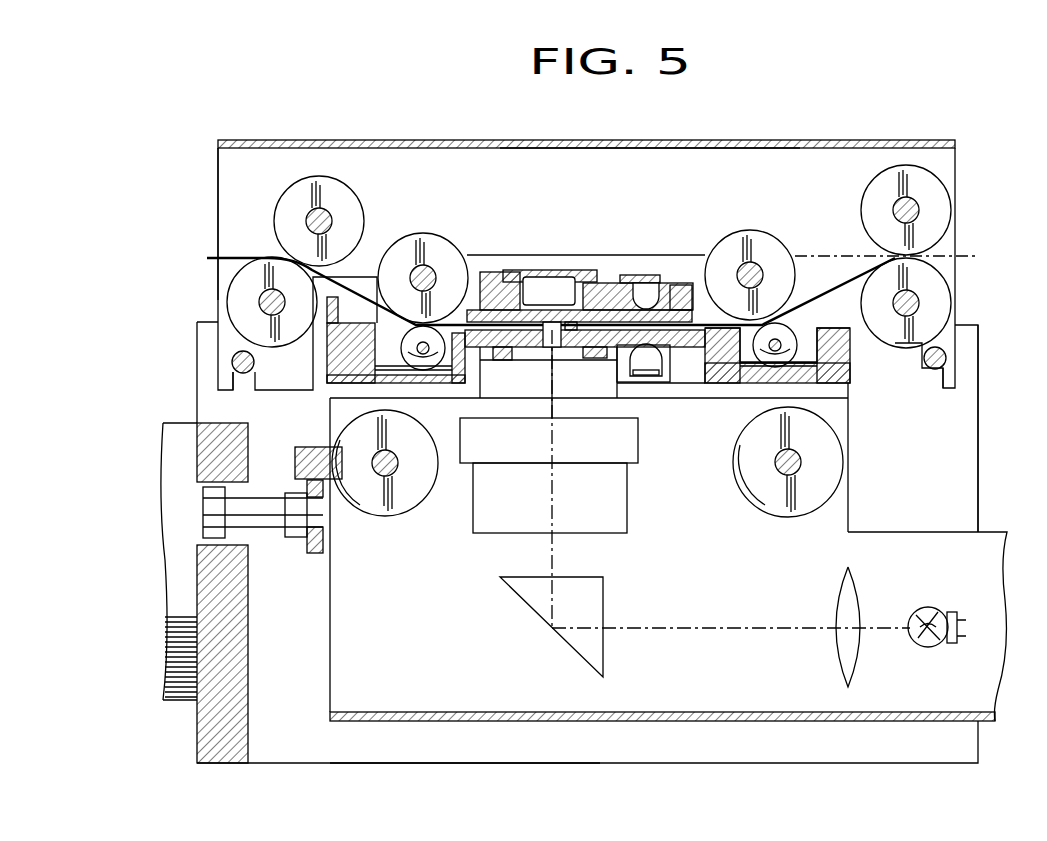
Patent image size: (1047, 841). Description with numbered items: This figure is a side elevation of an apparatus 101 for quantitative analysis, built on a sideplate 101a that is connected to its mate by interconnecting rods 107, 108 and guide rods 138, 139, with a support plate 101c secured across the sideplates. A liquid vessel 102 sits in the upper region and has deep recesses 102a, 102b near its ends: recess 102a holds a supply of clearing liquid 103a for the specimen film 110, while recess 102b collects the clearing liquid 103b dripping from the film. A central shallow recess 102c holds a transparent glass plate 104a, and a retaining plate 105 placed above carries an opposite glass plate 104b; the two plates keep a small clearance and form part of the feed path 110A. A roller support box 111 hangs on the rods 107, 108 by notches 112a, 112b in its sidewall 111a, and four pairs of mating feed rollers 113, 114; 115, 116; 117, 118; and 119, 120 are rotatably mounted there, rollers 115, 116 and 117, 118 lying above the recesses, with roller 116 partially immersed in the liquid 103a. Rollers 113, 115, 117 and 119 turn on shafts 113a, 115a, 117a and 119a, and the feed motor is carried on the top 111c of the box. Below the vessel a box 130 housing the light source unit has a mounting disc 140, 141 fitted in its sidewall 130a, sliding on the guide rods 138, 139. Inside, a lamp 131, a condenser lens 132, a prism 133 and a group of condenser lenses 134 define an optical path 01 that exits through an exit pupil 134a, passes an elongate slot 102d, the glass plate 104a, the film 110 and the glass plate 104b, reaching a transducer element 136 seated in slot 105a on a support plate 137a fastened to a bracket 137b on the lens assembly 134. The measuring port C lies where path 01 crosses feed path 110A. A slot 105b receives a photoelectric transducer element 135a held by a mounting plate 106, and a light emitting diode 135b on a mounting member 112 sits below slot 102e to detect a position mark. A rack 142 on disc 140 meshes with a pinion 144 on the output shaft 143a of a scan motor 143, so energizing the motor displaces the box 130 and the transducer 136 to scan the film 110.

The apparatus for quantitative analysis 101 is at (628, 782).
The sideplate 101a is at (978, 402).
The support plate 101c is at (248, 742).
The liquid vessel 102 is at (848, 365).
The deep recess 102a is at (318, 385).
The deep recess 102b is at (830, 370).
The shallow recess 102c is at (484, 360).
The elongate slot 102d is at (546, 348).
The slot 102e is at (690, 383).
The clearing liquid 103a is at (372, 480).
The clearing liquid 103b is at (800, 462).
The transparent glass plate 104a is at (574, 360).
The transparent glass plate 104b is at (580, 348).
The retaining plate 105 is at (483, 296).
The elongate slot 105a is at (508, 270).
The slot 105b is at (692, 265).
The mounting plate 106 is at (675, 285).
The interconnecting rod 107 is at (232, 362).
The interconnecting rod 108 is at (935, 370).
The specimen film 110 is at (228, 257).
The feed path 110A is at (972, 256).
The roller support box 111 is at (390, 136).
The sidewall 111a is at (258, 155).
The top 111c is at (650, 140).
The mounting member 112 is at (643, 382).
The notch 112a is at (233, 380).
The notch 112b is at (945, 380).
The feed roller 113 is at (290, 200).
The shaft 113a is at (328, 212).
The feed roller 114 is at (275, 262).
The feed roller 115 is at (410, 250).
The shaft 115a is at (428, 266).
The feed roller 116 is at (428, 370).
The feed roller 117 is at (768, 250).
The shaft 117a is at (762, 272).
The feed roller 118 is at (790, 328).
The feed roller 119 is at (866, 200).
The shaft 119a is at (918, 208).
The feed roller 120 is at (950, 302).
The box 130 is at (378, 722).
The sidewall 130a is at (455, 742).
The lamp 131 is at (930, 642).
The condenser lens 132 is at (840, 640).
The prism 133 is at (538, 597).
The group of condenser lenses 134 is at (628, 510).
The exit pupil 134a is at (546, 395).
The photoelectric transducer element 135a is at (640, 275).
The light emitting diode 135b is at (656, 378).
The transducer element 136 is at (560, 270).
The support plate 137a is at (640, 283).
The bracket 137b is at (618, 385).
The guide rod 138 is at (372, 478).
The guide rod 139 is at (776, 470).
The mounting disc 140 is at (420, 500).
The mounting disc 141 is at (812, 498).
The rack 142 is at (295, 460).
The scan motor 143 is at (200, 612).
The output shaft 143a is at (258, 530).
The pinion 144 is at (318, 553).
The measuring port C is at (548, 278).
The optical path 01 is at (555, 548).